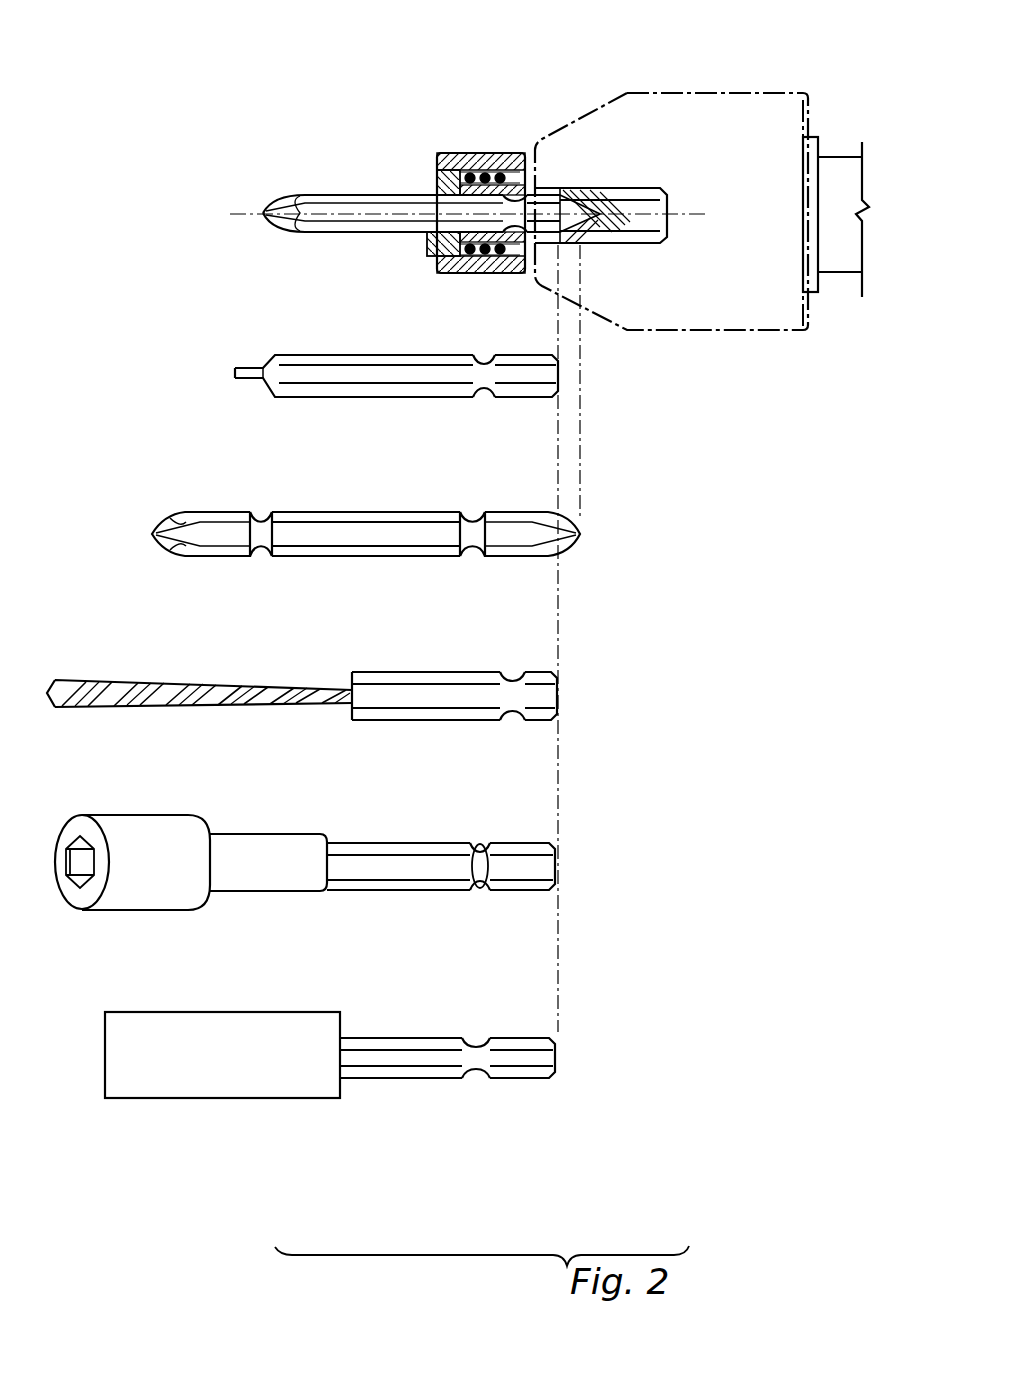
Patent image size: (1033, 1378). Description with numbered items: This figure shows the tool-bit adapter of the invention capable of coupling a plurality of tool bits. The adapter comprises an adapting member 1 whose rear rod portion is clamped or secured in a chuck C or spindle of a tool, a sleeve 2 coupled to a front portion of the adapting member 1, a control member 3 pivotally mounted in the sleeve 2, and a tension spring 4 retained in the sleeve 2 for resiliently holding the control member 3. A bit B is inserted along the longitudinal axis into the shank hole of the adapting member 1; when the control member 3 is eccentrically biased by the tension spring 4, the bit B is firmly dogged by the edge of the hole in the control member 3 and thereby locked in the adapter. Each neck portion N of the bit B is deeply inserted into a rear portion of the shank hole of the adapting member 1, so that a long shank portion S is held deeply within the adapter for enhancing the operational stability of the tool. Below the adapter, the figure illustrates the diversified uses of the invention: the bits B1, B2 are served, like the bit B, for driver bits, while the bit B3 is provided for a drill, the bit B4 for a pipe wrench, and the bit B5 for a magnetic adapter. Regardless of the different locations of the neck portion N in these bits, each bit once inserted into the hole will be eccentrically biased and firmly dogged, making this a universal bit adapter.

The chuck C is at (661, 90).
The adapting member 1 is at (590, 184).
The sleeve 2 is at (470, 151).
The control member 3 is at (432, 179).
The tension spring 4 is at (493, 172).
The bit B is at (327, 191).
The shank portion S is at (384, 235).
The neck portion N is at (533, 246).
The bit B1 is at (378, 397).
The bit B2 is at (350, 560).
The bit B3 is at (306, 709).
The bit B4 is at (423, 893).
The bit B5 is at (338, 1104).